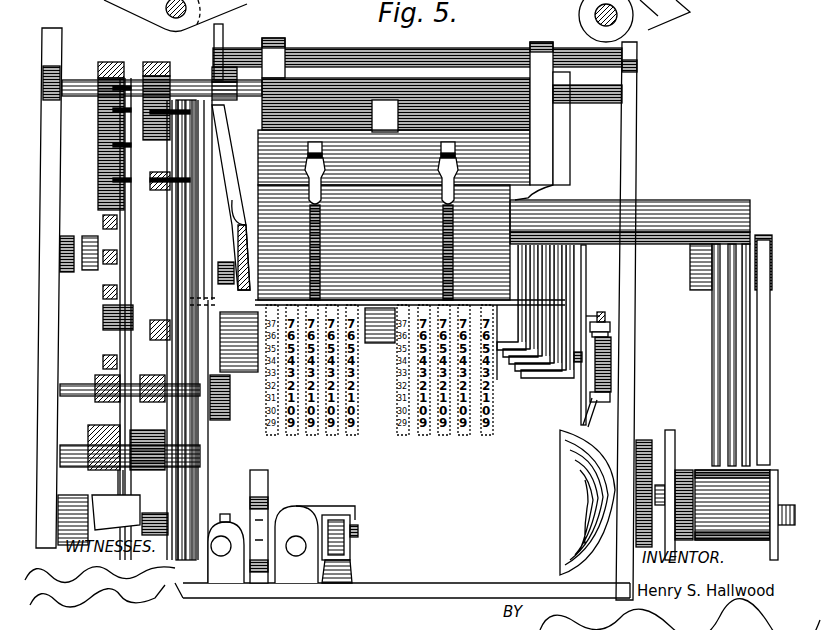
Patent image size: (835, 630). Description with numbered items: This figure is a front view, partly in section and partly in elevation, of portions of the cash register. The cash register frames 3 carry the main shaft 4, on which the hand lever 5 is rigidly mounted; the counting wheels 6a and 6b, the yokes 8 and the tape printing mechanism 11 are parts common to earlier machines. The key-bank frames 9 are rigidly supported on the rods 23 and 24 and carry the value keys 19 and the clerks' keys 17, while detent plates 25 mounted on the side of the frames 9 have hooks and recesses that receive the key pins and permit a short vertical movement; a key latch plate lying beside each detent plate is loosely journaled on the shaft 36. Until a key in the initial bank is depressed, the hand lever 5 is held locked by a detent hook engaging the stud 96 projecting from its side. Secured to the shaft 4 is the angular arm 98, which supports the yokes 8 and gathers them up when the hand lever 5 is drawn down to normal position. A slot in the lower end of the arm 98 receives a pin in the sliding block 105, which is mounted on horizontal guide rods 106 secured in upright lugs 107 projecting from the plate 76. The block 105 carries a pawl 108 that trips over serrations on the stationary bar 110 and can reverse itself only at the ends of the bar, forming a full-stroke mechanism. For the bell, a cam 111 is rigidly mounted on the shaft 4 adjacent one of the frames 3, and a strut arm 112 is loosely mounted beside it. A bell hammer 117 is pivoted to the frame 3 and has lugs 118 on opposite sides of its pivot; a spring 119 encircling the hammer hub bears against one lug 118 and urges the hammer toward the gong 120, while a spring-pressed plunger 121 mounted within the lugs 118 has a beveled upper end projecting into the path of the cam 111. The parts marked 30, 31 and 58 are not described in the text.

The cash register frame 3 is at (42, 306).
The main shaft 4 is at (62, 272).
The hand lever 5 is at (231, 197).
The counting wheels 6a is at (312, 436).
The counting wheels 6b is at (420, 436).
The yokes 8 is at (530, 374).
The key-bank frame 9 is at (149, 65).
The tape printing mechanism 11 is at (733, 362).
The clerks' keys 17 is at (150, 200).
The value keys 19 is at (105, 147).
The rod 23 is at (185, 82).
The rod 24 is at (92, 384).
The detent plate 25 is at (104, 315).
The block 30 is at (118, 495).
The gear 31 is at (72, 500).
The shaft 36 is at (168, 12).
The lever 58 is at (660, 25).
The plate 76 is at (455, 590).
The stud 96 is at (226, 262).
The angular arm 98 is at (268, 483).
The sliding block 105 is at (283, 522).
The guide rods 106 is at (219, 556).
The upright lugs 107 is at (226, 530).
The pawl 108 is at (350, 545).
The stationary bar 110 is at (350, 569).
The cam 111 is at (607, 310).
The strut arm 112 is at (586, 316).
The bell hammer 117 is at (584, 413).
The lugs 118 is at (608, 336).
The spring 119 is at (605, 372).
The gong 120 is at (562, 470).
The plunger 121 is at (610, 327).